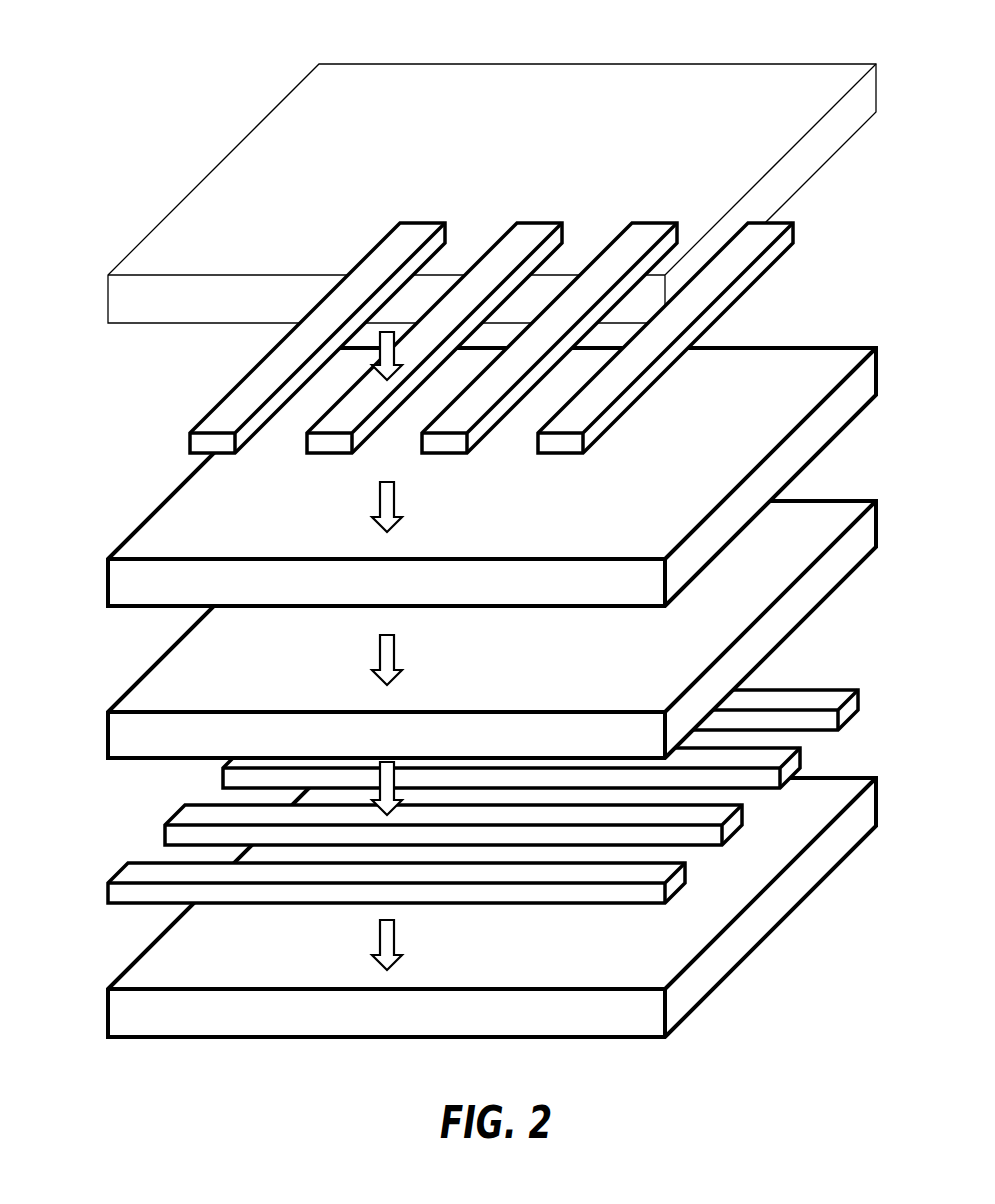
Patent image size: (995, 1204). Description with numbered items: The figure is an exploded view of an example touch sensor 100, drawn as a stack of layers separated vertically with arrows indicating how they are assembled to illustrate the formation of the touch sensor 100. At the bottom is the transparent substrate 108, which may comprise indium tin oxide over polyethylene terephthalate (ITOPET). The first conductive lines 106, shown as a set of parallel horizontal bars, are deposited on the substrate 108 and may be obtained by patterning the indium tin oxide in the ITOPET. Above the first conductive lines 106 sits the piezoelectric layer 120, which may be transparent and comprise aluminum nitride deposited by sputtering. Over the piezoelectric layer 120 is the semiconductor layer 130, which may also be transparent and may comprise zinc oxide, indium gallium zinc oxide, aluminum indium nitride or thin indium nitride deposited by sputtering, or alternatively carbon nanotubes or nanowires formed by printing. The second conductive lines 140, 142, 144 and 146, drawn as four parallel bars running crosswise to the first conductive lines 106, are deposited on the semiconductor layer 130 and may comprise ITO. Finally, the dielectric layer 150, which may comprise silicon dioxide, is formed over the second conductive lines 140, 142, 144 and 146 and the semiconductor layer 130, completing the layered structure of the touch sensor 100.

The touch sensor 100 is at (462, 541).
The first conductive lines 106 is at (130, 877).
The substrate 108 is at (108, 1013).
The piezoelectric layer 120 is at (108, 737).
The semiconductor layer 130 is at (108, 585).
The second conductive line 140 is at (222, 420).
The second conductive line 142 is at (328, 445).
The second conductive line 144 is at (445, 445).
The second conductive line 146 is at (560, 445).
The dielectric layer 150 is at (108, 300).